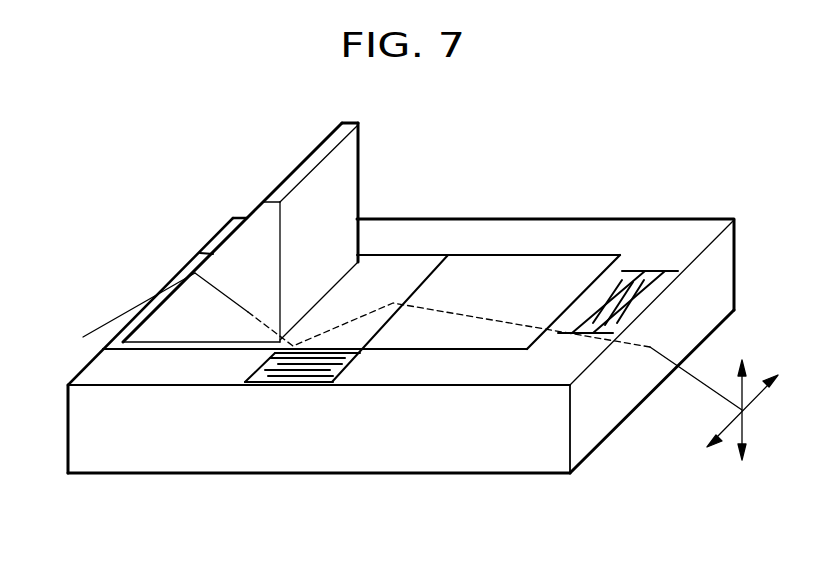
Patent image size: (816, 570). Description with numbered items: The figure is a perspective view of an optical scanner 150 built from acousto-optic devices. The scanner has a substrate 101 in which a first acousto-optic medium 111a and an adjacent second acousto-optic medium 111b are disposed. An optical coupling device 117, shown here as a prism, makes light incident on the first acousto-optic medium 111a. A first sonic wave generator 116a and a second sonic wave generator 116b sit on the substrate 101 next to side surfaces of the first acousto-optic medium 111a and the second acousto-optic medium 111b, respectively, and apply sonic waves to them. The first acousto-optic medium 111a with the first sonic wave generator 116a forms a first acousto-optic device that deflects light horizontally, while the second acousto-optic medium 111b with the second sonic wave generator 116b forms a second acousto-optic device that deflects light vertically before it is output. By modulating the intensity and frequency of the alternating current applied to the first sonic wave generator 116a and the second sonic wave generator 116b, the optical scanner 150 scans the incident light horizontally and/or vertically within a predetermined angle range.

The optical scanner 150 is at (357, 534).
The substrate 101 is at (457, 462).
The first acousto-optic medium 111a is at (400, 265).
The second acousto-optic medium 111b is at (518, 277).
The first sonic wave generator 116a is at (262, 363).
The second sonic wave generator 116b is at (657, 271).
The optical coupling device 117 is at (302, 170).